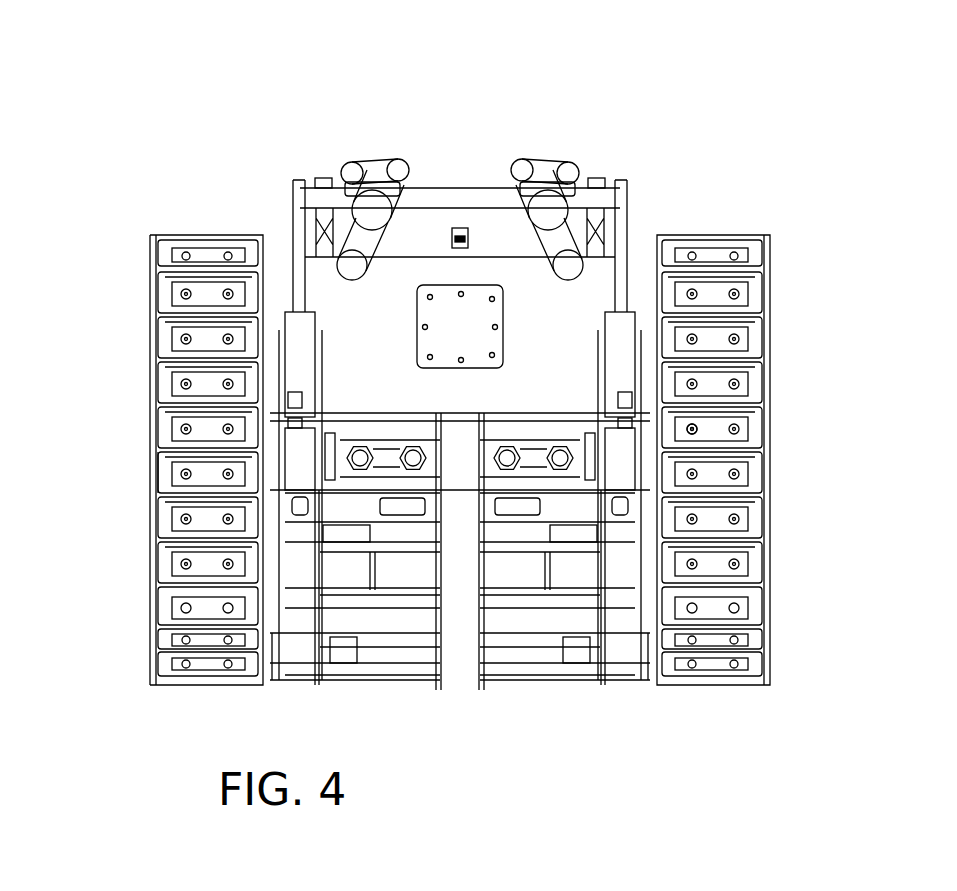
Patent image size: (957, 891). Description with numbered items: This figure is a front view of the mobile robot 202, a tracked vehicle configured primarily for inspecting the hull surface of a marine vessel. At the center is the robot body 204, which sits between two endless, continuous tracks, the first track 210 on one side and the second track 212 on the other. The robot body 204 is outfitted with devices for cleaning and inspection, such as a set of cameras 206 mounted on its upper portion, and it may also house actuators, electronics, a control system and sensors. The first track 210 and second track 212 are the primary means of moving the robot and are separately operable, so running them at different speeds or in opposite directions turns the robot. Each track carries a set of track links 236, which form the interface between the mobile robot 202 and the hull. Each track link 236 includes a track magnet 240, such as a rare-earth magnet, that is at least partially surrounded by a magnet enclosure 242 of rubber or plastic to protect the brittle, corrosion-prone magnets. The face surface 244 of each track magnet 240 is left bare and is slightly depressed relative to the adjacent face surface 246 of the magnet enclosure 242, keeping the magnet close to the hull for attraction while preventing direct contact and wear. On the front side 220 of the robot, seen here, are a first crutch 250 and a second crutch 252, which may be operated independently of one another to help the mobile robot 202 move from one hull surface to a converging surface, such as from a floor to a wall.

The mobile robot 202 is at (609, 92).
The robot body 204 is at (316, 282).
The cameras 206 is at (560, 235).
The first track 210 is at (135, 416).
The second track 212 is at (792, 434).
The front side 220 is at (350, 377).
The track links 236 is at (152, 516).
The track magnet 240 is at (208, 477).
The magnet enclosure 242 is at (160, 482).
The face surface of track magnet 244 is at (718, 443).
The face surface of magnet enclosure 246 is at (766, 433).
The first crutch 250 is at (315, 567).
The second crutch 252 is at (607, 568).